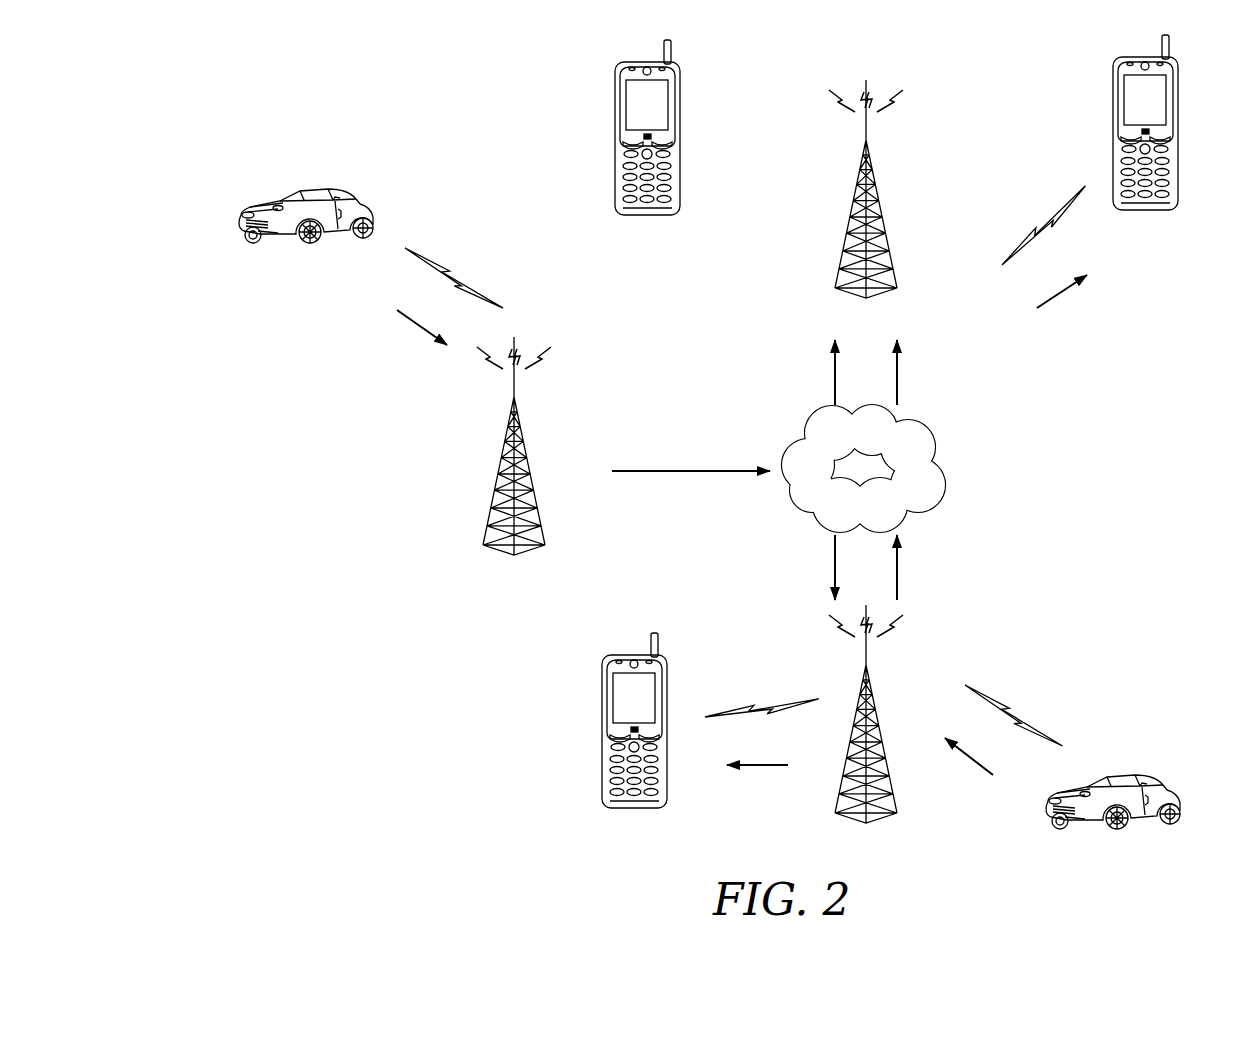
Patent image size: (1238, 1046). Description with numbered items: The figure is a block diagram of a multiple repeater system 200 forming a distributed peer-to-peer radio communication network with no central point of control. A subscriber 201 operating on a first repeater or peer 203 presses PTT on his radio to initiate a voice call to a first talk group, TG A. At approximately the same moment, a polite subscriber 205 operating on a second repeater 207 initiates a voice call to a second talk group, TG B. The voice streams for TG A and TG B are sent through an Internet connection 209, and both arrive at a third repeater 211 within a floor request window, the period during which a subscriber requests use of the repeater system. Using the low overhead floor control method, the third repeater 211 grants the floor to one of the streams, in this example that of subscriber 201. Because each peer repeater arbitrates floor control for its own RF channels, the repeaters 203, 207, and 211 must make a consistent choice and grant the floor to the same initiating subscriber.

The multiple repeater system 200 is at (226, 92).
The subscriber 201 is at (317, 188).
The first repeater 203 is at (527, 458).
The polite subscriber 205 is at (1130, 775).
The repeater 207 is at (878, 719).
The Internet connection 209 is at (945, 477).
The third repeater 211 is at (880, 213).